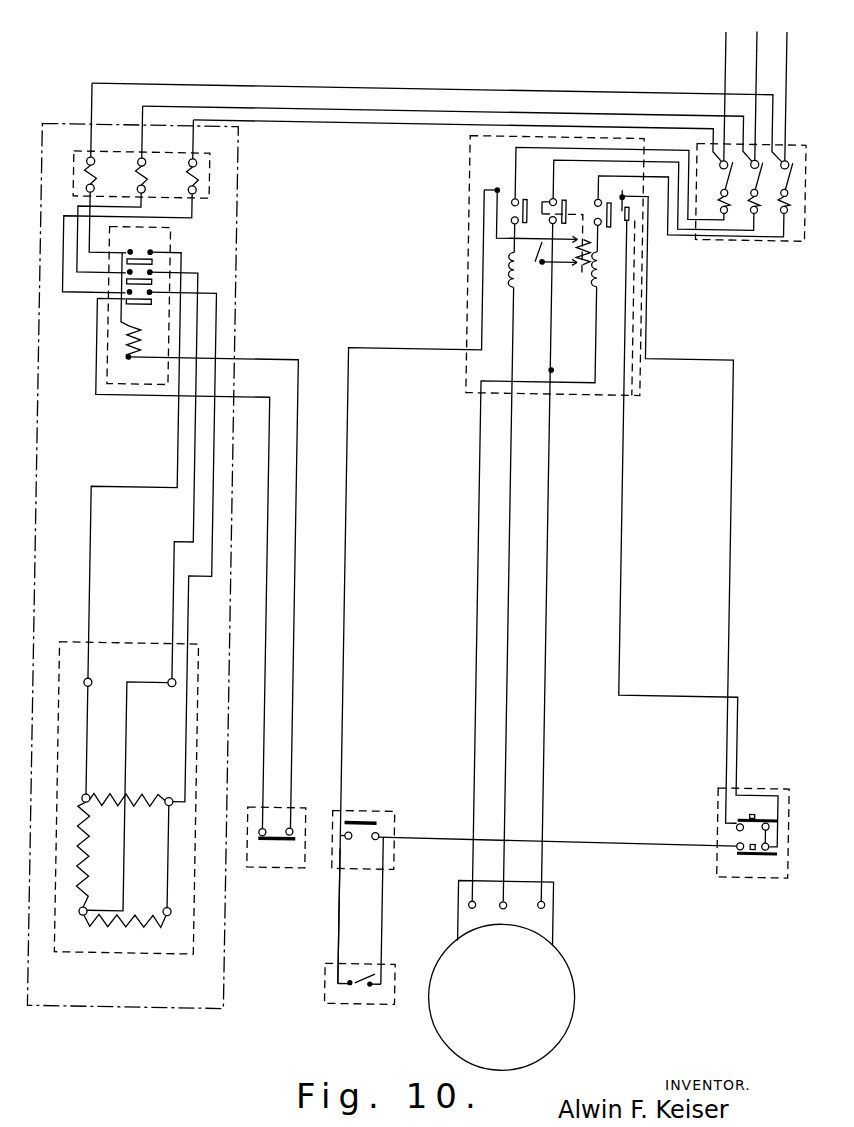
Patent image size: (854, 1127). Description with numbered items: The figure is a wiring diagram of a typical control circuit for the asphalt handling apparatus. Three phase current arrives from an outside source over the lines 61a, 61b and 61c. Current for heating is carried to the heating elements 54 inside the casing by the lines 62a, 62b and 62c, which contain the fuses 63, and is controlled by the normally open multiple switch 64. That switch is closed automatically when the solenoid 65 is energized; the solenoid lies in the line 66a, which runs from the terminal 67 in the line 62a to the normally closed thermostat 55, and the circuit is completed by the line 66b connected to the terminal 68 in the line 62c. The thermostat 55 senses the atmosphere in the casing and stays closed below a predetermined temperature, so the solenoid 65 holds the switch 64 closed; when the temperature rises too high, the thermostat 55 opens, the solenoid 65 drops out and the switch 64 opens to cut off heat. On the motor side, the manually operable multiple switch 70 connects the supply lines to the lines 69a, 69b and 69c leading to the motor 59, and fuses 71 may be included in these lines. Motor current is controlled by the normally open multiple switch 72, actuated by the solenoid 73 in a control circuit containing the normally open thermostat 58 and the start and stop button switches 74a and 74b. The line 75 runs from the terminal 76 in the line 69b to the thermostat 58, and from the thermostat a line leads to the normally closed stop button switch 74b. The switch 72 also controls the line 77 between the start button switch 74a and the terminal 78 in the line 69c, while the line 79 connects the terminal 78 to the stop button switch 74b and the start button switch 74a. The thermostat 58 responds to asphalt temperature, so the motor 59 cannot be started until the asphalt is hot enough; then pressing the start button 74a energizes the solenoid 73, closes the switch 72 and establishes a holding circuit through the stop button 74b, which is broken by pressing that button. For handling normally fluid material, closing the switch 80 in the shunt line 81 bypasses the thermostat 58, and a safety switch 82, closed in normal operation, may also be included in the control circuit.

The heating elements 54 is at (150, 800).
The thermostat 55 is at (277, 845).
The thermostat 58 is at (374, 822).
The motor 59 is at (579, 976).
The line 61a is at (716, 68).
The line 61b is at (748, 52).
The line 61c is at (779, 52).
The line 62a is at (430, 89).
The line 62b is at (343, 110).
The line 62c is at (416, 126).
The fuses 63 is at (90, 180).
The multiple switch 64 is at (149, 275).
The solenoid 65 is at (118, 357).
The line 66a is at (296, 428).
The line 66b is at (267, 505).
The terminal 67 is at (122, 262).
The terminal 68 is at (121, 297).
The line 69a is at (694, 236).
The line 69b is at (729, 236).
The line 69c is at (765, 236).
The multiple switch 70 is at (711, 182).
The fuses 71 is at (754, 209).
The multiple switch 72 is at (577, 210).
The solenoid 73 is at (577, 264).
The start button switch 74a is at (740, 816).
The stop button switch 74b is at (727, 845).
The line 75 is at (406, 349).
The terminal 76 is at (594, 838).
The line 77 is at (622, 580).
The terminal 78 is at (595, 197).
The line 79 is at (730, 500).
The switch 80 is at (370, 992).
The shunt line 81 is at (345, 942).
The safety switch 82 is at (531, 262).